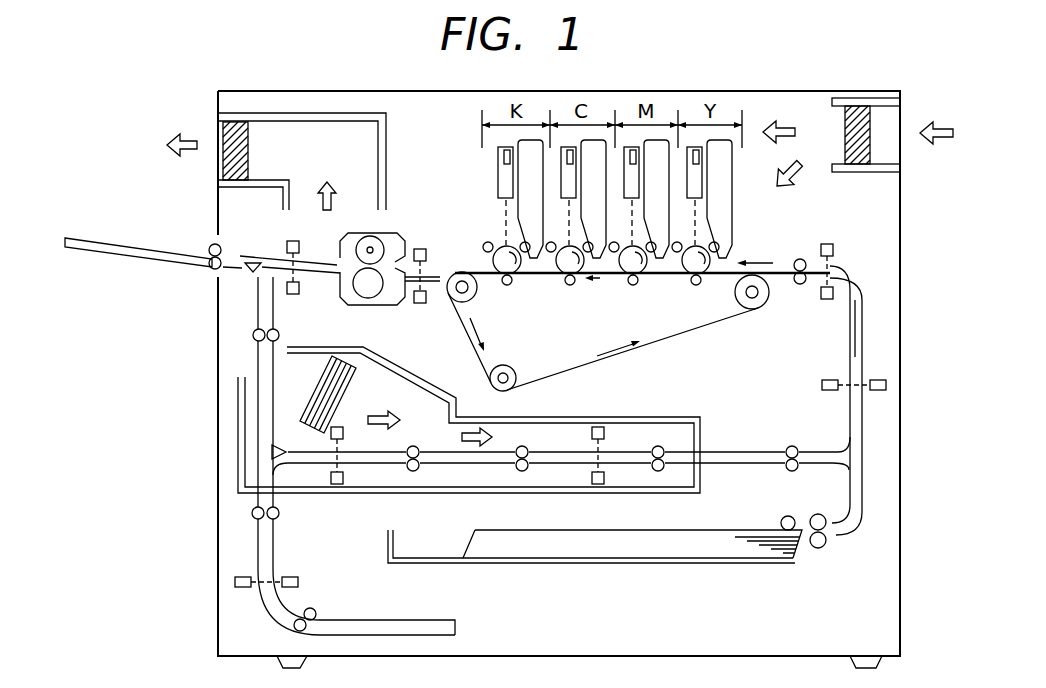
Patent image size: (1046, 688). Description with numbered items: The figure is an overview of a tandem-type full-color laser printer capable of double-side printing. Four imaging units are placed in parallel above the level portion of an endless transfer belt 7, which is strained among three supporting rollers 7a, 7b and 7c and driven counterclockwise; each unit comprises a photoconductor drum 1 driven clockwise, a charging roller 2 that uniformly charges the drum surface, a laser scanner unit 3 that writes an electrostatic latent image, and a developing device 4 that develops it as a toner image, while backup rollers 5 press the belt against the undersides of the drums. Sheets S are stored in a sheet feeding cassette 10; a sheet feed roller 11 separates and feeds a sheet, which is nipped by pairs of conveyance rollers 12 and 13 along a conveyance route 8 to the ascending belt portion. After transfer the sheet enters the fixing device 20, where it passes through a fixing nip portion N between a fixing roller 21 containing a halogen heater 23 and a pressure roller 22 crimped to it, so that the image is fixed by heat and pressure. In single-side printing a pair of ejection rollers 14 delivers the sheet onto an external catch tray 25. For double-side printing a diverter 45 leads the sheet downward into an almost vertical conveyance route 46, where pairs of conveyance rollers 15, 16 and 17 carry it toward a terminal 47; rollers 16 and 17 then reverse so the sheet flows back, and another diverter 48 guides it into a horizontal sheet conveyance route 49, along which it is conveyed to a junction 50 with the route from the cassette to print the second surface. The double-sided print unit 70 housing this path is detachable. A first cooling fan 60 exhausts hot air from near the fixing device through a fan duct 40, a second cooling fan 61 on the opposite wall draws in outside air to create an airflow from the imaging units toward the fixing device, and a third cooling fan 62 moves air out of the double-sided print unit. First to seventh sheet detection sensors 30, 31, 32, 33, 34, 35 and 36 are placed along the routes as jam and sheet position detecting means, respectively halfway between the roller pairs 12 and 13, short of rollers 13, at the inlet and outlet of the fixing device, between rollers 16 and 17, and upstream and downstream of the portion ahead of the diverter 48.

The photoconductor drum 1 is at (688, 278).
The charging roller 2 is at (653, 243).
The laser scanner unit 3 is at (702, 172).
The developing device 4 is at (733, 186).
The backup roller 5 is at (696, 286).
The transfer belt 7 is at (662, 312).
The supporting roller 7a is at (757, 310).
The supporting roller 7b is at (452, 300).
The supporting roller 7c is at (517, 372).
The conveyance route 8 is at (864, 430).
The sheet feeding cassette 10 is at (633, 566).
The sheet feed roller 11 is at (782, 516).
The pair of conveyance rollers 12 is at (826, 544).
The pair of conveyance rollers 13 is at (802, 285).
The pair of ejection rollers 14 is at (210, 246).
The pair of conveyance rollers 15 is at (253, 335).
The pair of conveyance rollers 16 is at (252, 513).
The pair of conveyance rollers 17 is at (294, 627).
The fixing device 20 is at (390, 314).
The fixing roller 21 is at (380, 243).
The pressure roller 22 is at (362, 295).
The halogen heater 23 is at (370, 250).
The external catch tray 25 is at (125, 242).
The first sheet detection sensor 30 is at (877, 380).
The second sheet detection sensor 31 is at (826, 244).
The third sheet detection sensor 32 is at (427, 256).
The fourth sheet detection sensor 33 is at (295, 241).
The fifth sheet detection sensor 34 is at (243, 588).
The sixth sheet detection sensor 35 is at (339, 427).
The seventh sheet detection sensor 36 is at (606, 434).
The fan duct 40 is at (386, 153).
The diverter 45 is at (254, 262).
The conveyance route 46 is at (276, 392).
The terminal 47 is at (458, 629).
The diverter 48 is at (276, 446).
The sheet conveyance route 49 is at (440, 452).
The junction 50 is at (848, 446).
The first cooling fan 60 is at (248, 146).
The second cooling fan 61 is at (855, 136).
The third cooling fan 62 is at (353, 377).
The double-sided print unit 70 is at (582, 415).
The fixing nip portion N is at (380, 266).
The sheet S is at (660, 545).